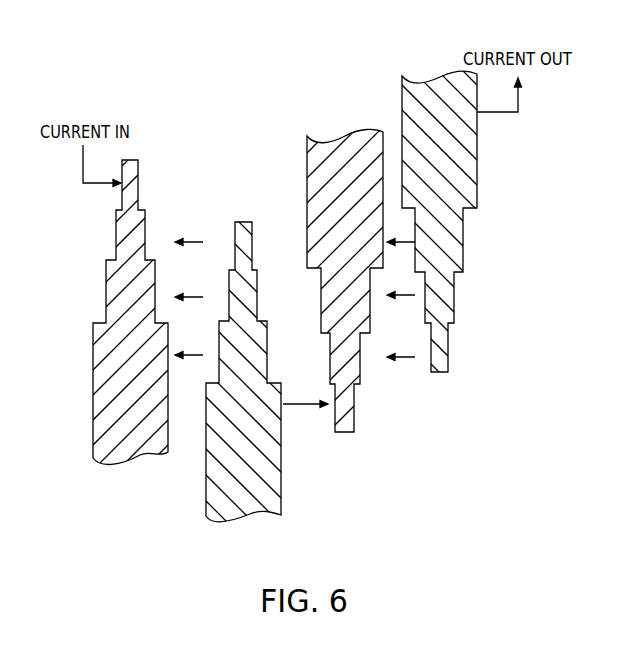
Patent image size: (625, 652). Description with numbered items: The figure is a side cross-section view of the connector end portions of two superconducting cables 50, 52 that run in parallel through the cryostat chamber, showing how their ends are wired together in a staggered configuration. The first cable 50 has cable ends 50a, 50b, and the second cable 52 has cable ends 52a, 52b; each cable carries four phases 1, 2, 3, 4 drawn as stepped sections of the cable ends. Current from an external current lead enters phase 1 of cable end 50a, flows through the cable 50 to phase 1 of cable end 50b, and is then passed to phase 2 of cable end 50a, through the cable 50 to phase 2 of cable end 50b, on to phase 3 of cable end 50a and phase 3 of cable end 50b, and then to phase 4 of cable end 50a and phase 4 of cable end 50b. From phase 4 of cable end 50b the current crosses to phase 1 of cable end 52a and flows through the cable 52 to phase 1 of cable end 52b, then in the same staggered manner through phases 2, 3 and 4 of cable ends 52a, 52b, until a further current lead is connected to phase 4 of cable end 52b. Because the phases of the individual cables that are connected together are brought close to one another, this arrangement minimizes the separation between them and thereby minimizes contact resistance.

The first superconducting cable 50 is at (93, 527).
The cable end of first cable 50a is at (102, 404).
The cable end of first cable 50b is at (275, 486).
The second superconducting cable 52 is at (307, 31).
The cable end of second cable 52a is at (312, 172).
The cable end of second cable 52b is at (470, 178).
The phase 1 is at (312, 326).
The phase 2 is at (312, 326).
The phase 3 is at (312, 326).
The phase 4 is at (312, 326).